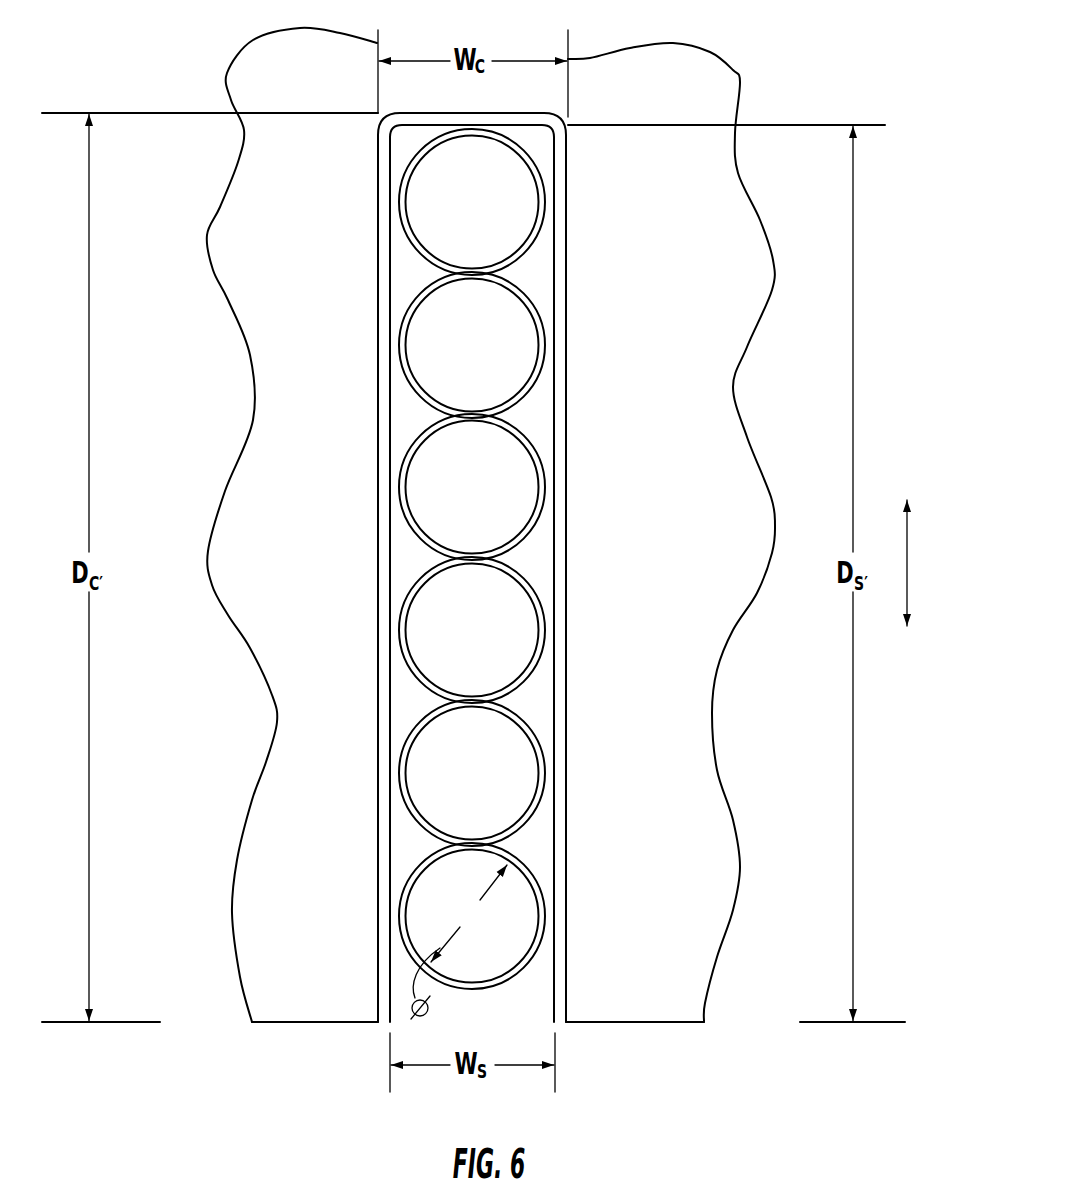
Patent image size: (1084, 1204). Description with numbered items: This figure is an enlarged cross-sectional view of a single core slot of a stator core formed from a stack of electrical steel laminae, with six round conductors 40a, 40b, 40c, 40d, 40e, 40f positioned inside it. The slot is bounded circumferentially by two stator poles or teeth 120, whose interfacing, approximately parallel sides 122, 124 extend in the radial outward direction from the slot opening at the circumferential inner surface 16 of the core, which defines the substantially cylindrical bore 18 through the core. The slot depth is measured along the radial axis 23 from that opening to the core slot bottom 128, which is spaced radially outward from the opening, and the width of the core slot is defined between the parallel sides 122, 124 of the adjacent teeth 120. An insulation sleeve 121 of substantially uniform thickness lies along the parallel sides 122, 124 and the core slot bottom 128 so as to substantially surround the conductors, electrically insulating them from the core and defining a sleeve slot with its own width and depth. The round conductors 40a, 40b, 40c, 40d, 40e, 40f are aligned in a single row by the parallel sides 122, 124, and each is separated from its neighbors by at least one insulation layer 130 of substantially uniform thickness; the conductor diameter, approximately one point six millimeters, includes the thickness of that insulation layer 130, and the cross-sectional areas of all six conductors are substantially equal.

The circumferential inner surface 16 is at (320, 1023).
The cylindrical bore 18 is at (648, 1168).
The radial axis 23 is at (910, 557).
The round conductor 40a is at (490, 930).
The round conductor 40b is at (458, 787).
The round conductor 40c is at (458, 644).
The round conductor 40d is at (458, 501).
The round conductor 40e is at (458, 359).
The round conductor 40f is at (458, 216).
The stator teeth 120 is at (285, 598).
The insulation sleeve 121 is at (388, 408).
The core slot side 122 is at (377, 960).
The core slot side 124 is at (562, 977).
The core slot bottom 128 is at (527, 116).
The insulation layer 130 is at (400, 178).